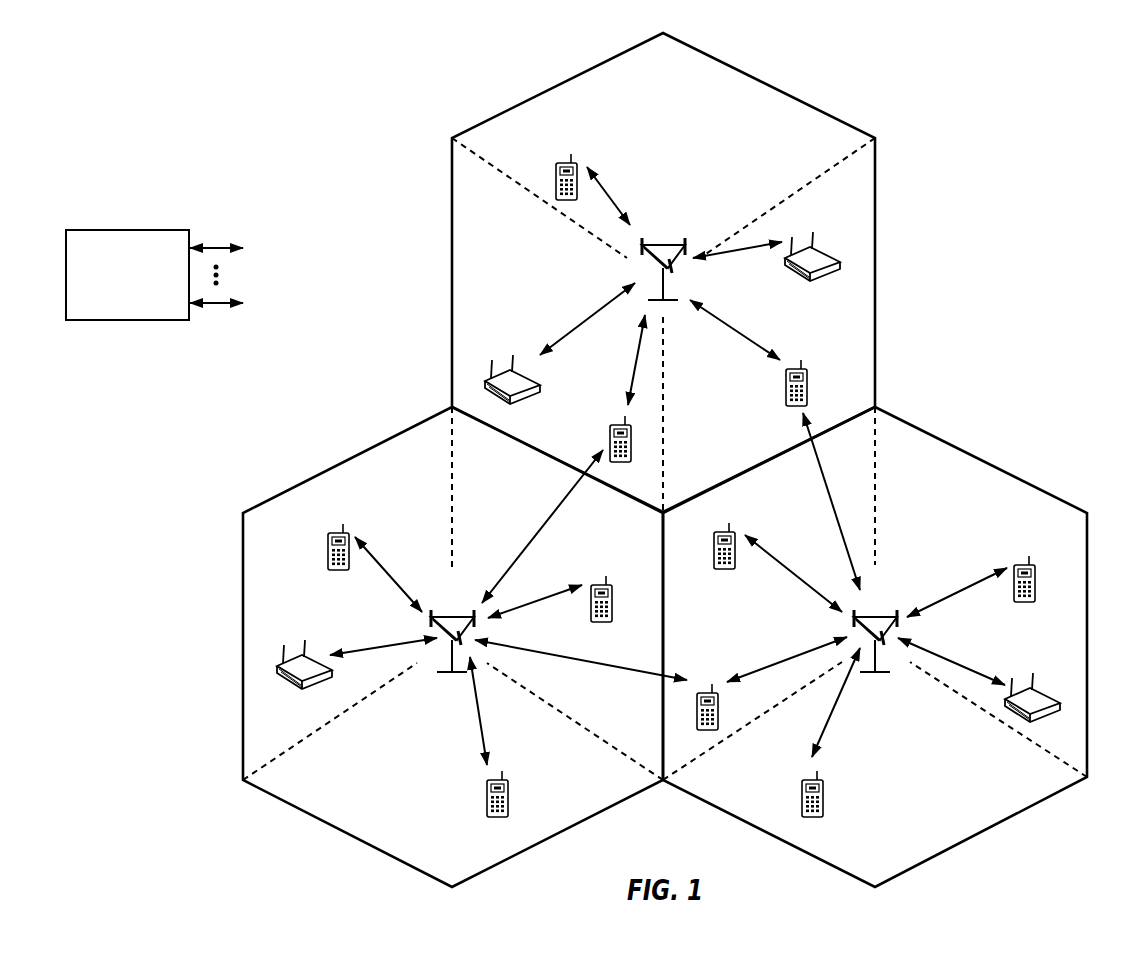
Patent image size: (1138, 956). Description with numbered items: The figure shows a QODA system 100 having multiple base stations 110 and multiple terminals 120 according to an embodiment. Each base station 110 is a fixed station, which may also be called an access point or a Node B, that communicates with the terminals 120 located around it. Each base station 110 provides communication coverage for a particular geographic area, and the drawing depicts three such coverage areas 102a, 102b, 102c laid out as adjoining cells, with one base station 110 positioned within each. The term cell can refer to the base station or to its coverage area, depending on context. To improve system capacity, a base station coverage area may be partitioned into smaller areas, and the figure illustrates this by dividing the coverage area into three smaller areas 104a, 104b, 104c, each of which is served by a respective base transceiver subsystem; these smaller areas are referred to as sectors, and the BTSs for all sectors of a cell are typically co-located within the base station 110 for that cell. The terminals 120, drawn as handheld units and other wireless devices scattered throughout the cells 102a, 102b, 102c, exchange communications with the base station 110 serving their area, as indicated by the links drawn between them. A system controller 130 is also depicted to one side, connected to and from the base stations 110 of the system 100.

The QODA system 100 is at (1018, 99).
The geographic area 102a is at (770, 84).
The geographic area 102b is at (348, 458).
The geographic area 102c is at (992, 443).
The smaller area 104a is at (684, 91).
The smaller area 104b is at (508, 244).
The smaller area 104c is at (756, 450).
The base station 110 is at (660, 240).
The terminal 120 is at (556, 167).
The system controller 130 is at (125, 230).